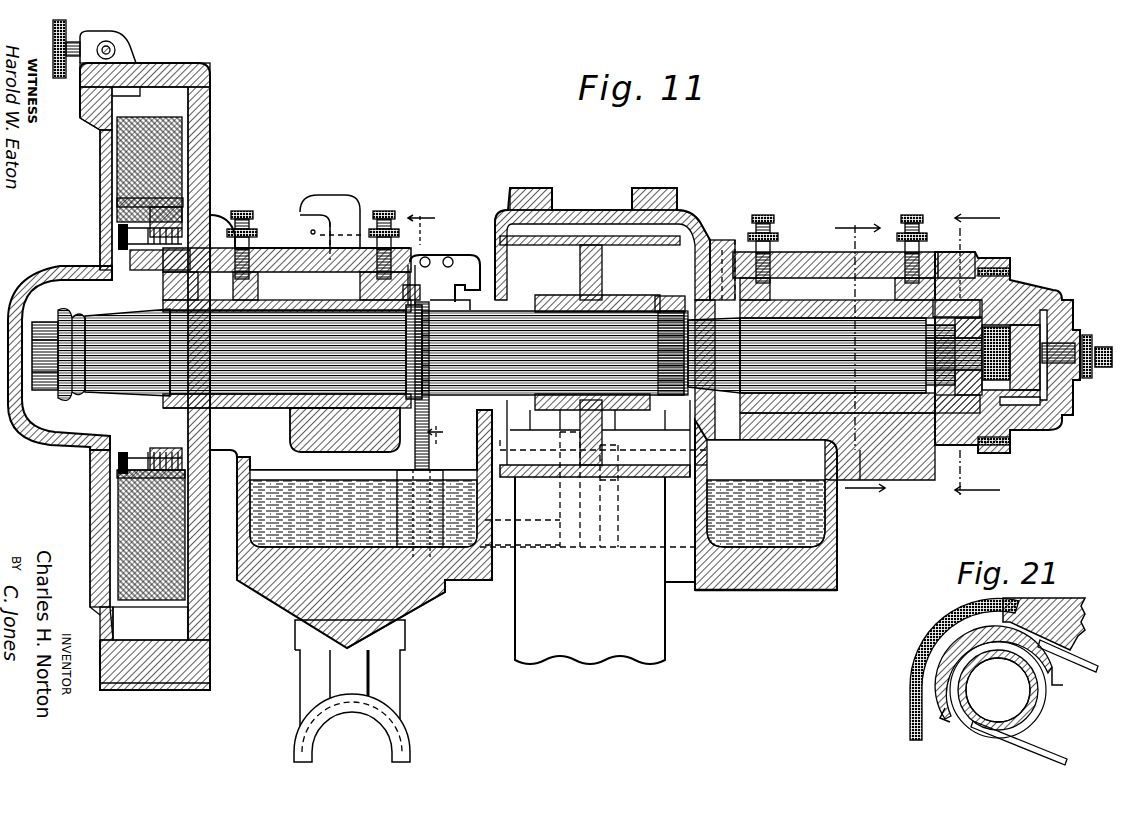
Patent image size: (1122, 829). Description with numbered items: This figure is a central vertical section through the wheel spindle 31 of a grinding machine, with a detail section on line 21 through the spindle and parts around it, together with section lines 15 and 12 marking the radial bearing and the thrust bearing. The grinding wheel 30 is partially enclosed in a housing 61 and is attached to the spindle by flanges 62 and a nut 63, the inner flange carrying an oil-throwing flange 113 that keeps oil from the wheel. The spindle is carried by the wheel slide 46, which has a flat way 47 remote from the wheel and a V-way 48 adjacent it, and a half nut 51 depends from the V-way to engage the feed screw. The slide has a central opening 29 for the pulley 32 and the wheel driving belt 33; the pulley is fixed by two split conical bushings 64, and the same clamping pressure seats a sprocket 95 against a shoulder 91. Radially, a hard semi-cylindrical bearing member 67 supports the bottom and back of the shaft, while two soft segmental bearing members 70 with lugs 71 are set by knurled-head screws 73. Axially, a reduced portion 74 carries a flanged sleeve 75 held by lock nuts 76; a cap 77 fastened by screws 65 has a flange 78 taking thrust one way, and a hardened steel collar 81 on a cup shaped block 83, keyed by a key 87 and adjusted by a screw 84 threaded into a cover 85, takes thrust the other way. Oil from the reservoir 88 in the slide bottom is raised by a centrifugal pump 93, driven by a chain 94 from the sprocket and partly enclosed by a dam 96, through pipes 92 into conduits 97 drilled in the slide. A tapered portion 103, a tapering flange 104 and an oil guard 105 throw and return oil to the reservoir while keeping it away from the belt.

In FIG. 11, the housing 61 is at (162, 70).
In FIG. 11, the grinding wheel 30 is at (133, 163).
In FIG. 11, the flanges 62 is at (147, 273).
In FIG. 11, the nut 63 is at (40, 387).
In FIG. 11, the shoulder 91 is at (415, 342).
In FIG. 11, the wheel spindle 31 is at (555, 330).
In FIG. 21, the wheel spindle 31 is at (1020, 700).
In FIG. 11, the segmental bearing members 70 is at (815, 300).
In FIG. 11, the lugs 71 is at (232, 291).
In FIG. 11, the screws 73 is at (243, 210).
In FIG. 11, the conduits 97 is at (315, 231).
In FIG. 11, the tapering flange 104 is at (452, 230).
In FIG. 11, the oil guard 105 is at (478, 255).
In FIG. 21, the oil guard 105 is at (940, 722).
In FIG. 11, the chain 94 is at (444, 262).
In FIG. 21, the chain 94 is at (1010, 740).
In FIG. 11, the sprocket 95 is at (418, 270).
In FIG. 21, the sprocket 95 is at (1043, 690).
In FIG. 11, the section line 21— 21 is at (437, 320).
In FIG. 11, the pulley 32 is at (635, 240).
In FIG. 11, the conical bushings 64 is at (522, 412).
In FIG. 11, the tapered portion 103 is at (728, 250).
In FIG. 11, the semi-cylindrical bearing member 67 is at (725, 398).
In FIG. 11, the pipes 92 is at (728, 433).
In FIG. 11, the oil-throwing flange 113 is at (200, 425).
In FIG. 11, the oil reservoir 88 is at (270, 520).
In FIG. 11, the dam 96 is at (400, 473).
In FIG. 11, the V-way 48 is at (440, 598).
In FIG. 11, the wheel driving belt 33 is at (530, 642).
In FIG. 11, the pump 93 is at (585, 530).
In FIG. 11, the opening 29 is at (683, 560).
In FIG. 11, the flat way 47 is at (800, 590).
In FIG. 11, the wheel slide 46 is at (840, 515).
In FIG. 21, the wheel slide 46 is at (1058, 604).
In FIG. 11, the half nut 51 is at (395, 698).
In FIG. 11, the lock nuts 76 is at (1050, 280).
In FIG. 11, the cup shaped block 83 is at (1040, 320).
In FIG. 11, the screw 84 is at (1082, 372).
In FIG. 11, the cover 85 is at (1062, 425).
In FIG. 11, the key 87 is at (1030, 408).
In FIG. 11, the screws 65 is at (1012, 270).
In FIG. 11, the cap 77 is at (1012, 260).
In FIG. 11, the hardened steel collar 81 is at (990, 262).
In FIG. 11, the flange 78 is at (927, 300).
In FIG. 11, the reduced portion 74 is at (862, 413).
In FIG. 11, the flanged sleeve 75 is at (925, 420).
In FIG. 11, the section line 15— 15 is at (860, 358).
In FIG. 11, the section line 12— 12 is at (987, 355).